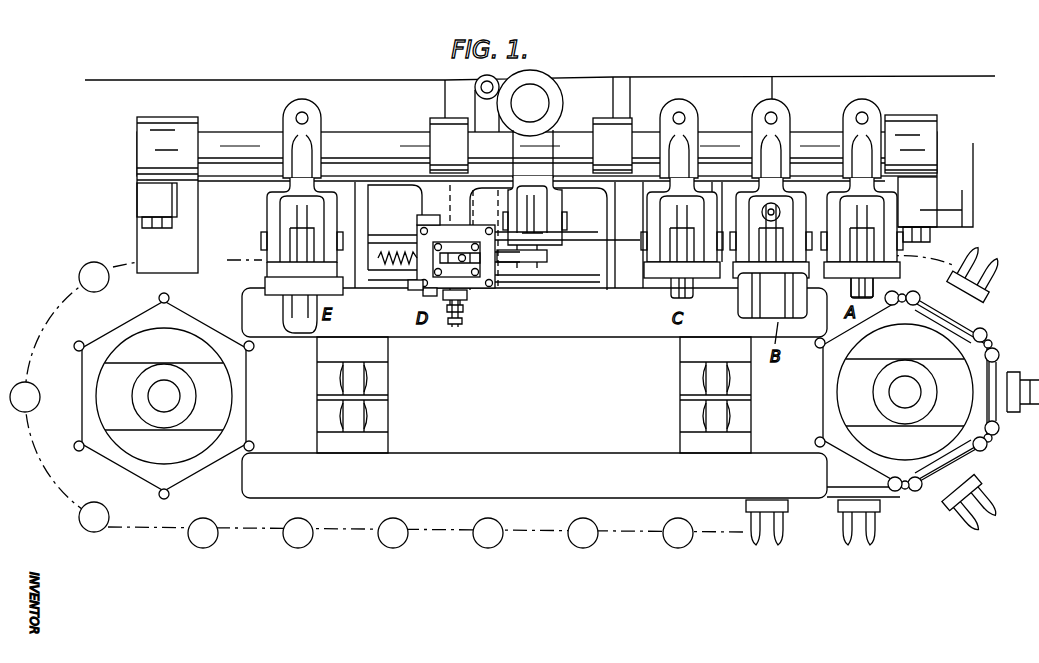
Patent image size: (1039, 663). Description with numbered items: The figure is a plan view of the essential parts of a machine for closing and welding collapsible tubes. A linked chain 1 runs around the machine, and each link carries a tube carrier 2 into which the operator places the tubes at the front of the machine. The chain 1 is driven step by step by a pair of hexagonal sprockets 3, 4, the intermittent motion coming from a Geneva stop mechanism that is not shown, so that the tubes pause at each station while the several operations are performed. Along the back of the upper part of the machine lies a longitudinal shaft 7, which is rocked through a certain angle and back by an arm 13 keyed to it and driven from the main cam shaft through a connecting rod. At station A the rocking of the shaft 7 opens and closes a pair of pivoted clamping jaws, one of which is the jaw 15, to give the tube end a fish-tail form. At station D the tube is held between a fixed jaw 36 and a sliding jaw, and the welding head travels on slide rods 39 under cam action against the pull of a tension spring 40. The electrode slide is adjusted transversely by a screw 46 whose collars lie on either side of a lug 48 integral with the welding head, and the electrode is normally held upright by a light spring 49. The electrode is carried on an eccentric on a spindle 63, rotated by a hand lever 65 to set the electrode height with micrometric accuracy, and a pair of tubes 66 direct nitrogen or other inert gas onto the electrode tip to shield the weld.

The linked chain 1 is at (935, 482).
The tube carrier 2 is at (755, 531).
The hexagonal sprocket 3 is at (118, 458).
The hexagonal sprocket 4 is at (973, 350).
The longitudinal shaft 7 is at (345, 134).
The arm 13 is at (548, 197).
The clamping jaw 15 is at (856, 288).
The fixed jaw 36 is at (510, 297).
The slide rods 39 is at (598, 277).
The tension spring 40 is at (388, 267).
The screw 46 is at (456, 326).
The lug 48 is at (468, 292).
The light spring 49 is at (440, 258).
The spindle 63 is at (467, 292).
The hand lever 65 is at (410, 286).
The tubes 66 is at (418, 216).